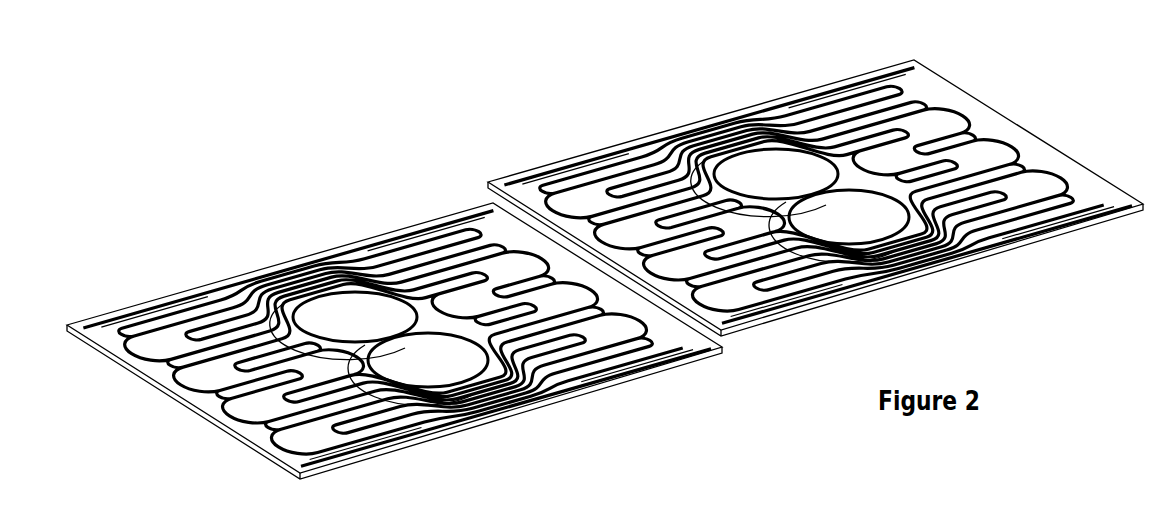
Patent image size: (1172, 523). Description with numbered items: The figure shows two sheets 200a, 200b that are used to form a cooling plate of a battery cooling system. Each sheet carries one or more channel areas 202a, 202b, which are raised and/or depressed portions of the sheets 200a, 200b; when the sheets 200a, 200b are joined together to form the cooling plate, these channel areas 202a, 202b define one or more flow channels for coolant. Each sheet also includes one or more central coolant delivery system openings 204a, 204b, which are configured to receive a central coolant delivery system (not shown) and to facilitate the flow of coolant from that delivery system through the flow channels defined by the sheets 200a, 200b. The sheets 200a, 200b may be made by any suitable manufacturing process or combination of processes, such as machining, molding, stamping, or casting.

The sheet 200a is at (177, 401).
The channel area 202a is at (110, 320).
The central coolant delivery system opening 204a is at (450, 370).
The sheet 200b is at (976, 100).
The channel area 202b is at (531, 180).
The central coolant delivery system opening 204b is at (871, 227).